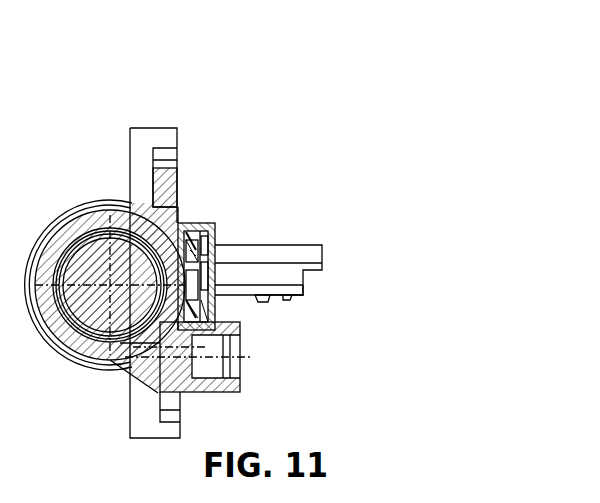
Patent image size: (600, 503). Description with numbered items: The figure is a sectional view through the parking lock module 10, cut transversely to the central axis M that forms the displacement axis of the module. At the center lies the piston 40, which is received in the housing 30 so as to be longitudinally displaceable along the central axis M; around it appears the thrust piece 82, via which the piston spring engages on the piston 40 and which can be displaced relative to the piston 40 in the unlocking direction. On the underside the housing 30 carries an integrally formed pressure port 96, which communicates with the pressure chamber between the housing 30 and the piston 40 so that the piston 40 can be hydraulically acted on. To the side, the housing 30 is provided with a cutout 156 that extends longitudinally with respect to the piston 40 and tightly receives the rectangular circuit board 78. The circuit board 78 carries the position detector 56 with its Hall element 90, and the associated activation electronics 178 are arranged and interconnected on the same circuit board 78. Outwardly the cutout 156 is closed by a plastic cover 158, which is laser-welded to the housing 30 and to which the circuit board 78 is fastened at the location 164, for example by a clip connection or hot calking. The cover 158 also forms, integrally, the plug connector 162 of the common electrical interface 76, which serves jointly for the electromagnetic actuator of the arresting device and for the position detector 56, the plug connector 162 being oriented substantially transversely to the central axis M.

The parking lock module 10 is at (241, 129).
The housing 30 is at (182, 220).
The central axis M is at (58, 242).
The position detector 56 is at (112, 236).
The thrust piece 82 is at (50, 328).
The piston 40 is at (63, 353).
The fastening of the circuit board to the cover 164 is at (160, 345).
The activation electronics 178 is at (184, 232).
The circuit board 78 is at (196, 258).
The Hall element 90 is at (217, 268).
The plug connector 162 is at (288, 270).
The common electrical interface 76 is at (305, 287).
The cutout 156 is at (222, 300).
The cover 158 is at (218, 312).
The pressure port 96 is at (242, 377).